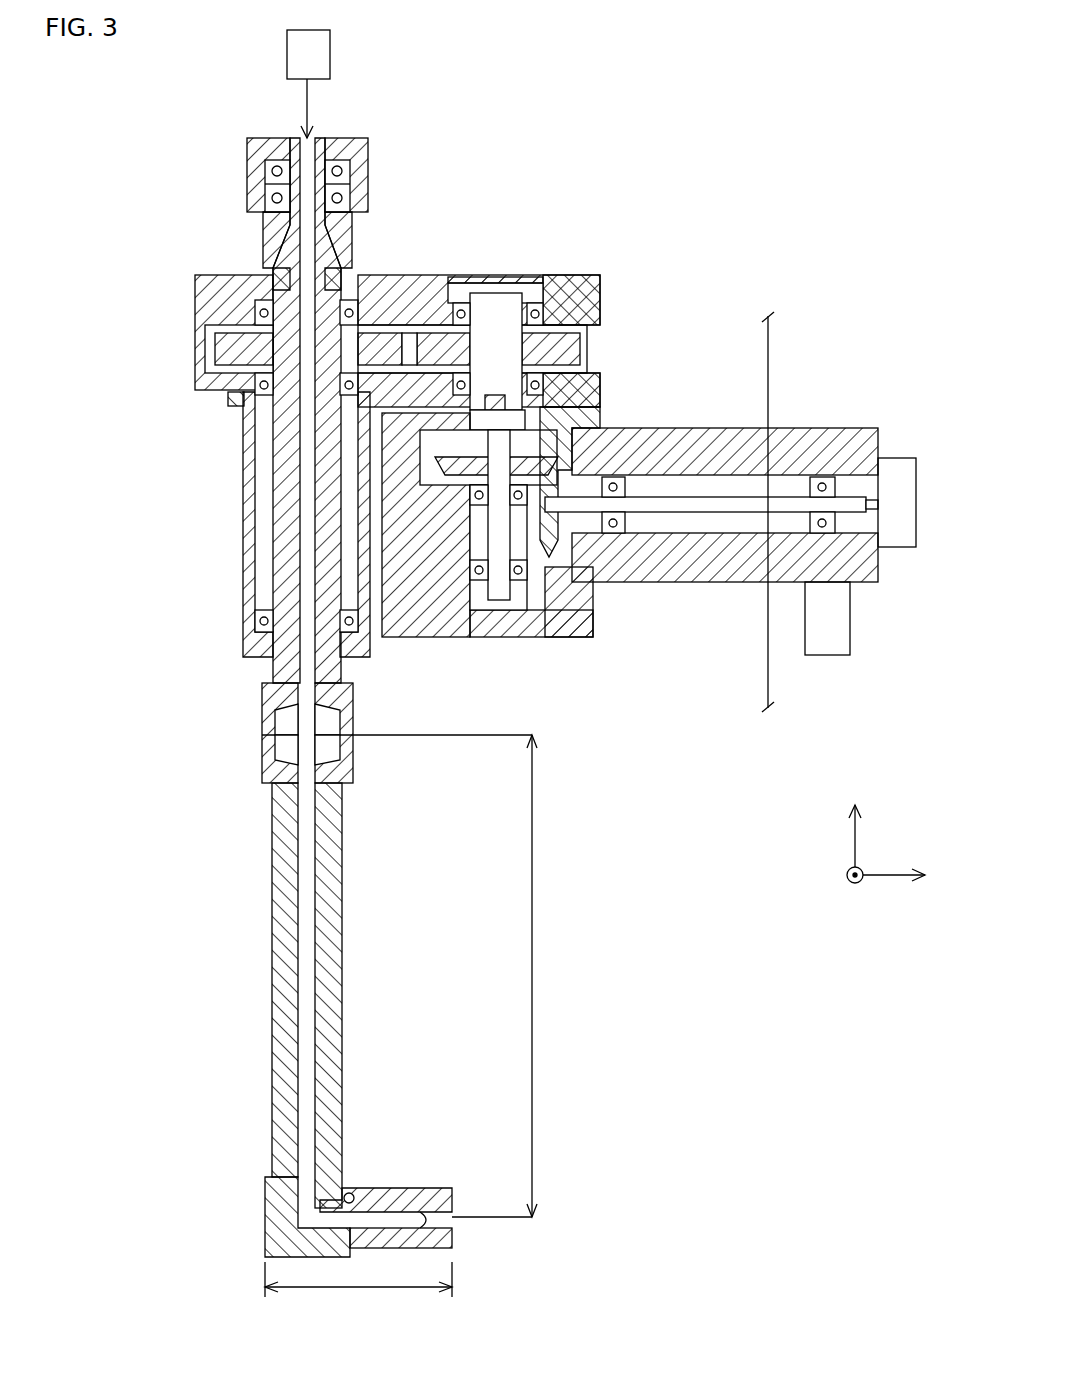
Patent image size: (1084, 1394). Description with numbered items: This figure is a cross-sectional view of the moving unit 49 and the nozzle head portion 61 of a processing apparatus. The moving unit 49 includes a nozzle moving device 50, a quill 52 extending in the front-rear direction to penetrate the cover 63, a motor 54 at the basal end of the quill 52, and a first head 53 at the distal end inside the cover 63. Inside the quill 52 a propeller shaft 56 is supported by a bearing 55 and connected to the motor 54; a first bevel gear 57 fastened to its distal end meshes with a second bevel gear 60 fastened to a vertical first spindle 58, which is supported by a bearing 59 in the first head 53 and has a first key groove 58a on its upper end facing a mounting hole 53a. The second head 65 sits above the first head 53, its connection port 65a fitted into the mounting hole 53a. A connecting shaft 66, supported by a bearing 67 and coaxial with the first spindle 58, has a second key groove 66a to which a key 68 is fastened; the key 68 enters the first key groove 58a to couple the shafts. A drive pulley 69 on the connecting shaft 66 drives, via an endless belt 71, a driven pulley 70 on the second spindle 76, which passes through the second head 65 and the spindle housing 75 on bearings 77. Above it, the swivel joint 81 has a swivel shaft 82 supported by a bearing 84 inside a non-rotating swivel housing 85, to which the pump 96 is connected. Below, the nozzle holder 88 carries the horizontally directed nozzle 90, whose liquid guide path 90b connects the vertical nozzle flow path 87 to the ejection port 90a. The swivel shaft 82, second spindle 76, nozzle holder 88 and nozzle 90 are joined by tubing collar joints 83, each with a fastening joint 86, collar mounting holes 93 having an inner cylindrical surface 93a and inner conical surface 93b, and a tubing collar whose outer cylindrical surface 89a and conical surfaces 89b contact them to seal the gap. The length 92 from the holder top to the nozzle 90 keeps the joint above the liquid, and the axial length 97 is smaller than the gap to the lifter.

The moving unit 49 is at (840, 295).
The nozzle moving device 50 is at (852, 620).
The quill 52 is at (680, 582).
The first head 53 is at (565, 637).
The mounting hole 53a is at (545, 470).
The motor 54 is at (900, 458).
The bearing 55 is at (822, 480).
The propeller shaft 56 is at (740, 512).
The first bevel gear 57 is at (540, 540).
The first spindle 58 is at (497, 600).
The first key groove 58a is at (506, 402).
The bearing 59 is at (520, 578).
The second bevel gear 60 is at (455, 470).
The nozzle head portion 61 is at (225, 118).
The cover 63 is at (766, 672).
The second head 65 is at (575, 277).
The connection port 65a is at (585, 435).
The connecting shaft 66 is at (470, 300).
The second key groove 66a is at (500, 395).
The bearing 67 is at (540, 283).
The key 68 is at (525, 412).
The drive pulley 69 is at (575, 340).
The driven pulley 70 is at (215, 350).
The endless belt 71 is at (410, 333).
The spindle housing 75 is at (243, 505).
The second spindle 76 is at (262, 460).
The bearing 77 is at (255, 312).
The swivel joint 81 is at (108, 118).
The swivel shaft 82 is at (263, 222).
The tubing collar joint 83 is at (262, 240).
The bearing 84 is at (265, 172).
The swivel housing 85 is at (247, 150).
The fastening joint 86 is at (295, 762).
The nozzle flow path 87 is at (300, 900).
The nozzle holder 88 is at (342, 850).
The outer cylindrical surface 89a is at (290, 728).
The conical surface 89b is at (285, 705).
The nozzle 90 is at (418, 1162).
The ejection port 90a is at (440, 1218).
The liquid guide path 90b is at (380, 1212).
The length 92 is at (533, 968).
The collar mounting hole 93 is at (178, 790).
The inner cylindrical surface 93a is at (300, 755).
The inner conical surface 93b is at (300, 770).
The pump 96 is at (330, 58).
The axial length 97 is at (368, 1287).